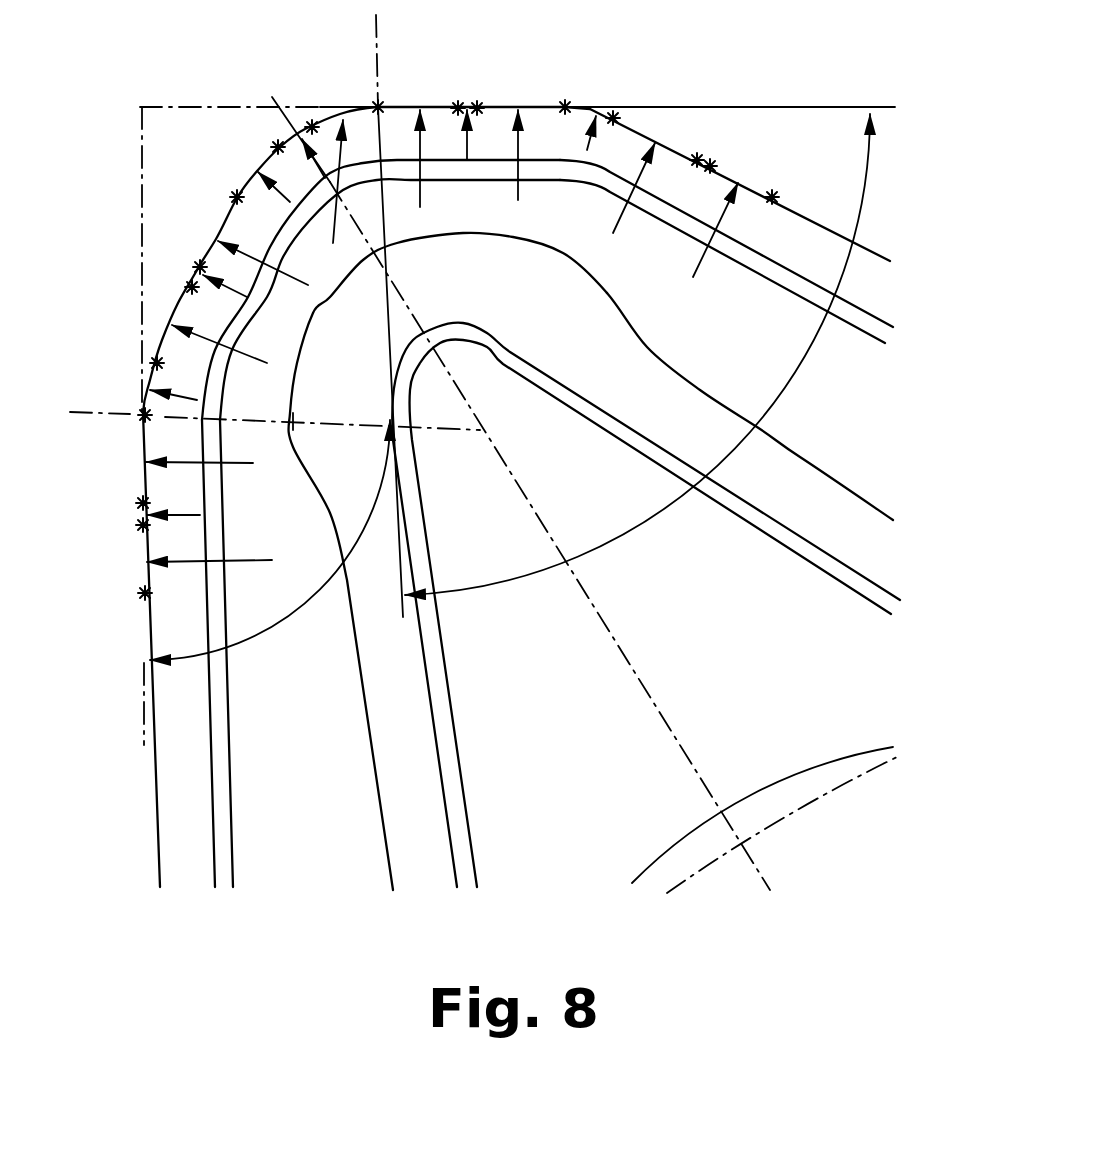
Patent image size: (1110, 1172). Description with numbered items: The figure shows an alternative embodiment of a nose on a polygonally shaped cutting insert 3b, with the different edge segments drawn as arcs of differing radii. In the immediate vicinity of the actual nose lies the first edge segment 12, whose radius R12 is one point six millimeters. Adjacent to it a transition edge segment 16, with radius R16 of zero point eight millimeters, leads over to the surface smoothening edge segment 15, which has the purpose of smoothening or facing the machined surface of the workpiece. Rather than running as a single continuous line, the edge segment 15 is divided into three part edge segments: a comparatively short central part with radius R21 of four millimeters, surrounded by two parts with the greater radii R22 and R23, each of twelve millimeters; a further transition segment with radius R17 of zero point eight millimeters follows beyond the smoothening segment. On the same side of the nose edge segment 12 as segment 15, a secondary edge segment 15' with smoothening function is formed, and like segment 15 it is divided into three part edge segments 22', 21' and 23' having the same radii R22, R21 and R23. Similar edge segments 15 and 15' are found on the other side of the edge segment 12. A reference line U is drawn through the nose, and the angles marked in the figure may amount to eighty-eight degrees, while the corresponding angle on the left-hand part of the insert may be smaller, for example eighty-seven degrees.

The first edge segment 12 is at (302, 137).
The transition edge segment 16 is at (352, 110).
The surface smoothening edge segment 15 is at (366, 211).
The secondary edge segment 15' is at (464, 463).
The part edge segment 22' is at (726, 186).
The part edge segment 21' is at (722, 196).
The part edge segment 23' is at (750, 318).
The cutting insert 3b is at (165, 722).
The reference axis U is at (393, 333).
The radius of first edge segment R12 is at (322, 178).
The radius of transition edge segment R16 is at (332, 203).
The radius of transition segment R17 is at (587, 150).
The radius of first part edge segment R21 is at (466, 143).
The radius of part edge segment R22 is at (425, 188).
The radius of part edge segment R23 is at (550, 213).